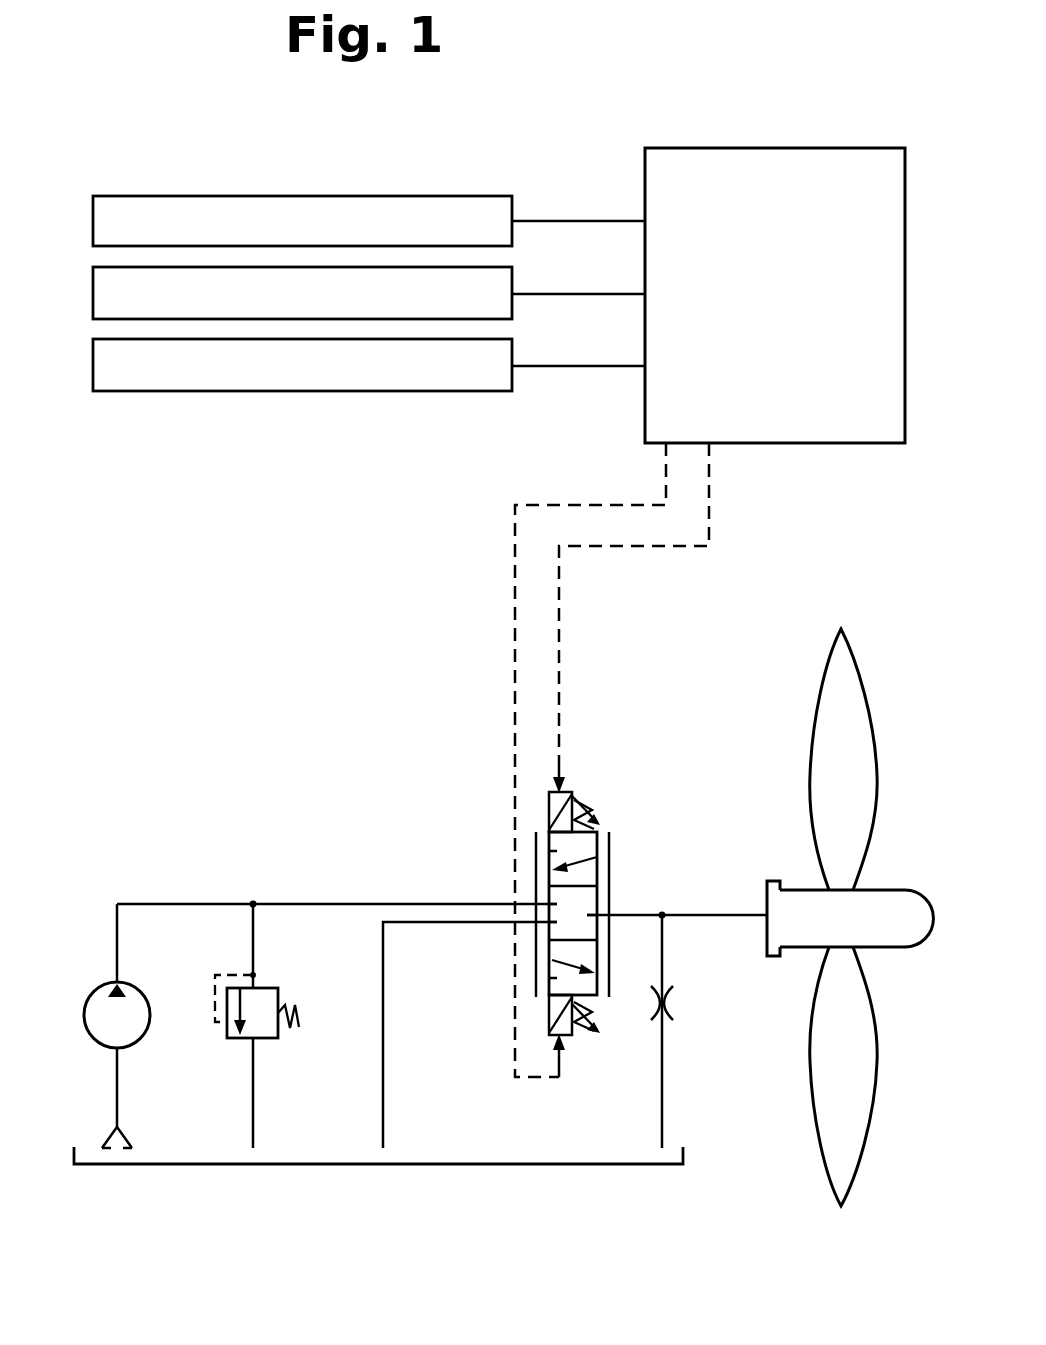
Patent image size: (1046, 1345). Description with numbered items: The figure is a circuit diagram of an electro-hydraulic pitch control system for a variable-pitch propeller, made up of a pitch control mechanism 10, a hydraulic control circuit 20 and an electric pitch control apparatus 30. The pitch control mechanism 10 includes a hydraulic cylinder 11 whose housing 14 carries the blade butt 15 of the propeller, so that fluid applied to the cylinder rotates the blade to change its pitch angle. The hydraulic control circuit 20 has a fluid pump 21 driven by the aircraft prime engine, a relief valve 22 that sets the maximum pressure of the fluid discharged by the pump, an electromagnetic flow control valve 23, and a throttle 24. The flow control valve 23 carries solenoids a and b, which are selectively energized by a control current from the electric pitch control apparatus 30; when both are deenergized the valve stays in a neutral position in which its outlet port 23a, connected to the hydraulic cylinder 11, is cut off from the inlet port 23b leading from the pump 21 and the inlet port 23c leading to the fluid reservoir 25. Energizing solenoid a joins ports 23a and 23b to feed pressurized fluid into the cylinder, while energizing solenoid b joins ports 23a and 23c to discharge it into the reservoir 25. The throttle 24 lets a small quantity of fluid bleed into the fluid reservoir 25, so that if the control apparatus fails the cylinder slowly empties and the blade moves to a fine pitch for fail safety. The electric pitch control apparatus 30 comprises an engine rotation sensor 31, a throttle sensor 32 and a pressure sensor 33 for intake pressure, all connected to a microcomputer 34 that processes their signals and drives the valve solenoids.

The pitch control mechanism 10 is at (884, 860).
The hydraulic cylinder 11 is at (904, 897).
The housing 14 is at (803, 897).
The blade butt 15 is at (813, 734).
The hydraulic control circuit 20 is at (428, 877).
The fluid pump 21 is at (142, 993).
The relief valve 22 is at (265, 990).
The electromagnetic flow control valve 23 is at (596, 913).
The outlet port 23a is at (609, 915).
The inlet port 23b is at (534, 902).
The inlet port 23c is at (548, 925).
The throttle 24 is at (669, 1003).
The fluid reservoir 25 is at (325, 1165).
The electric pitch control apparatus 30 is at (444, 170).
The engine rotation sensor 31 is at (93, 216).
The throttle sensor 32 is at (93, 291).
The pressure sensor 33 is at (93, 364).
The microcomputer 34 is at (881, 159).
The solenoid a is at (566, 1035).
The solenoid b is at (567, 792).